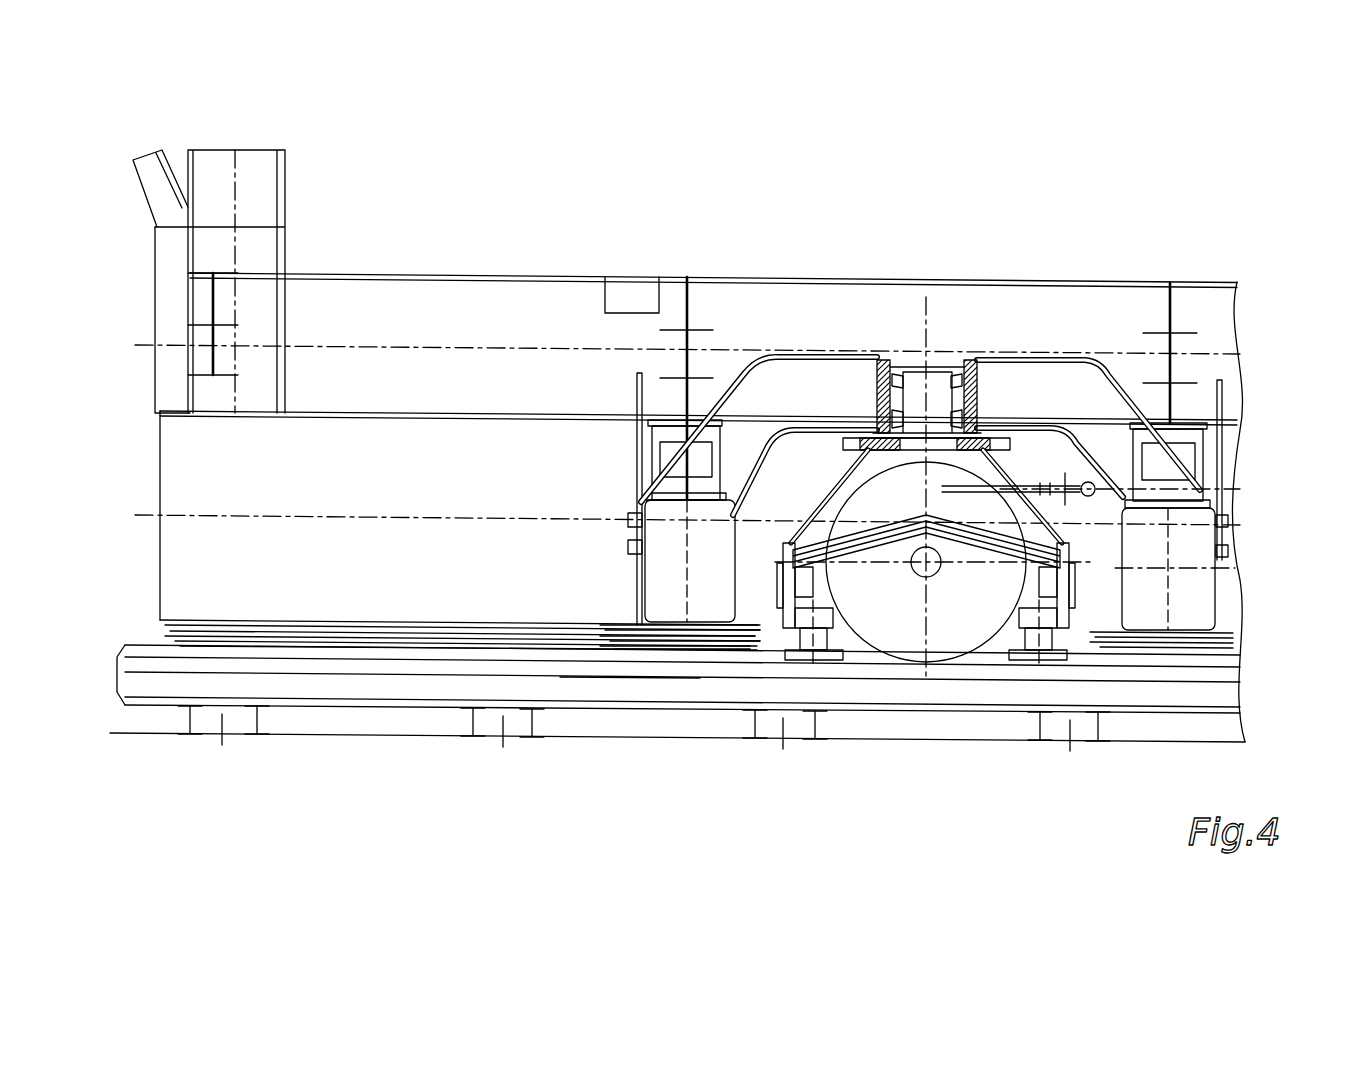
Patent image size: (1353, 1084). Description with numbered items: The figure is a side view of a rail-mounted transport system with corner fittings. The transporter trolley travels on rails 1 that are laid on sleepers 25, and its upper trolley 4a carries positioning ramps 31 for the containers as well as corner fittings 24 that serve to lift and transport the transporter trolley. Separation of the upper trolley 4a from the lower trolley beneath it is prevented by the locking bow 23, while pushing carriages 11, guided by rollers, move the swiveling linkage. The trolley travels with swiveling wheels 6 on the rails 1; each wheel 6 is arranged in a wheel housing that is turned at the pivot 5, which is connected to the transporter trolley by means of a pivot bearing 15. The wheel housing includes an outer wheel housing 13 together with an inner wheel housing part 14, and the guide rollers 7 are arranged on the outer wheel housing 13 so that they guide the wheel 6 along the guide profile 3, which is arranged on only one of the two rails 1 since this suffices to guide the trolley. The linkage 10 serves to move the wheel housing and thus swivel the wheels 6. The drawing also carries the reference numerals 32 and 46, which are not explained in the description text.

The rails 1 is at (648, 683).
The guide profile 3 is at (727, 653).
The upper trolley 4a is at (438, 305).
The pivot 5 is at (942, 380).
The swiveling wheels 6 is at (880, 623).
The guide rollers 7 is at (795, 663).
The linkage 10 is at (1088, 503).
The pushing carriages 11 is at (1197, 593).
The outer wheel housing 13 is at (855, 515).
The inner wheel housing part 14 is at (940, 593).
The pivot bearing 15 is at (897, 370).
The locking bow 23 is at (1215, 415).
The corner fittings 24 is at (625, 287).
The sleepers 25 is at (533, 733).
The positioning ramps 31 is at (155, 165).
The pipe 32 is at (765, 385).
The lower body 46 is at (365, 597).